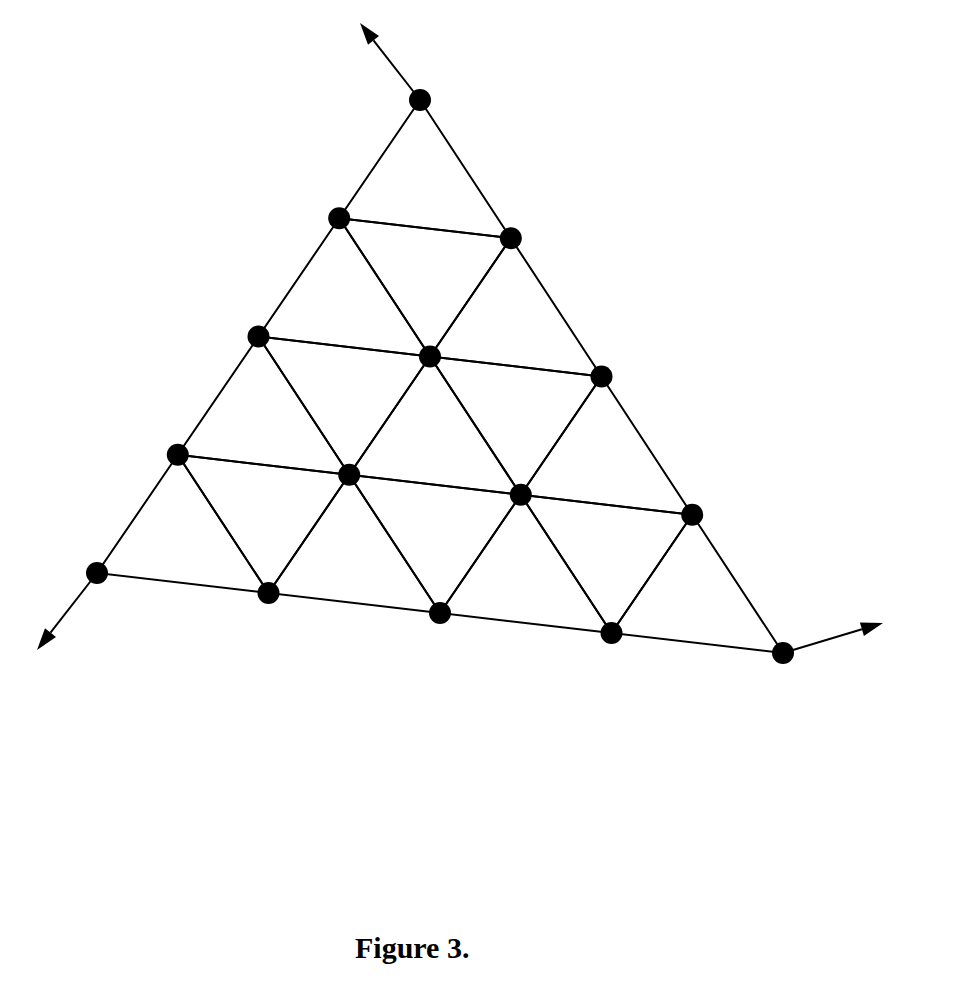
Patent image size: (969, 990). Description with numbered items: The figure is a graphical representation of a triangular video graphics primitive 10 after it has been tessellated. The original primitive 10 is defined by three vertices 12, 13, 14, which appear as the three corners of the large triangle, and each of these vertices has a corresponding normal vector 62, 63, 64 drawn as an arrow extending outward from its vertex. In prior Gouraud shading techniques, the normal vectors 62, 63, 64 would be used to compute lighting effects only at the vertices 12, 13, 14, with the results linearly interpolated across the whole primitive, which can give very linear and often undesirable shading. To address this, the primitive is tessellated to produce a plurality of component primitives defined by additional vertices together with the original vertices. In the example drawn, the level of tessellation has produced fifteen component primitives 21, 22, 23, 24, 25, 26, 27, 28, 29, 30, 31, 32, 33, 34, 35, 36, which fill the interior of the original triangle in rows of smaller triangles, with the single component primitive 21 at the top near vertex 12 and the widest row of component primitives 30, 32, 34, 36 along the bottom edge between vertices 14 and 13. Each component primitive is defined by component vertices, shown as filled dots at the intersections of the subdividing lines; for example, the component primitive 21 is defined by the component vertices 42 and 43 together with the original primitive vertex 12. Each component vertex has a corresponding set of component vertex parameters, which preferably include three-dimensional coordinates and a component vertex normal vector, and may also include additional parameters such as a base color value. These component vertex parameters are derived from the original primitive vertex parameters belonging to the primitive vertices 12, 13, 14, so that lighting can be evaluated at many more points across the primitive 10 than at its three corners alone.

The video graphics primitive 10 is at (440, 427).
The vertex 12 is at (430, 97).
The vertex 13 is at (782, 662).
The vertex 14 is at (107, 577).
The component primitive 21 is at (425, 169).
The component primitive 22 is at (345, 287).
The component primitive 23 is at (425, 287).
The component primitive 24 is at (516, 307).
The component primitive 25 is at (263, 406).
The component primitive 26 is at (345, 406).
The component primitive 27 is at (435, 426).
The component primitive 28 is at (516, 426).
The component primitive 29 is at (606, 446).
The component primitive 30 is at (183, 524).
The component primitive 31 is at (263, 524).
The component primitive 32 is at (355, 544).
The component primitive 33 is at (435, 544).
The component primitive 34 is at (526, 564).
The component primitive 35 is at (606, 564).
The component primitive 36 is at (698, 584).
The component vertex 42 is at (515, 238).
The component vertex 43 is at (340, 207).
The normal vector 62 is at (392, 62).
The normal vector 63 is at (823, 645).
The normal vector 64 is at (67, 608).